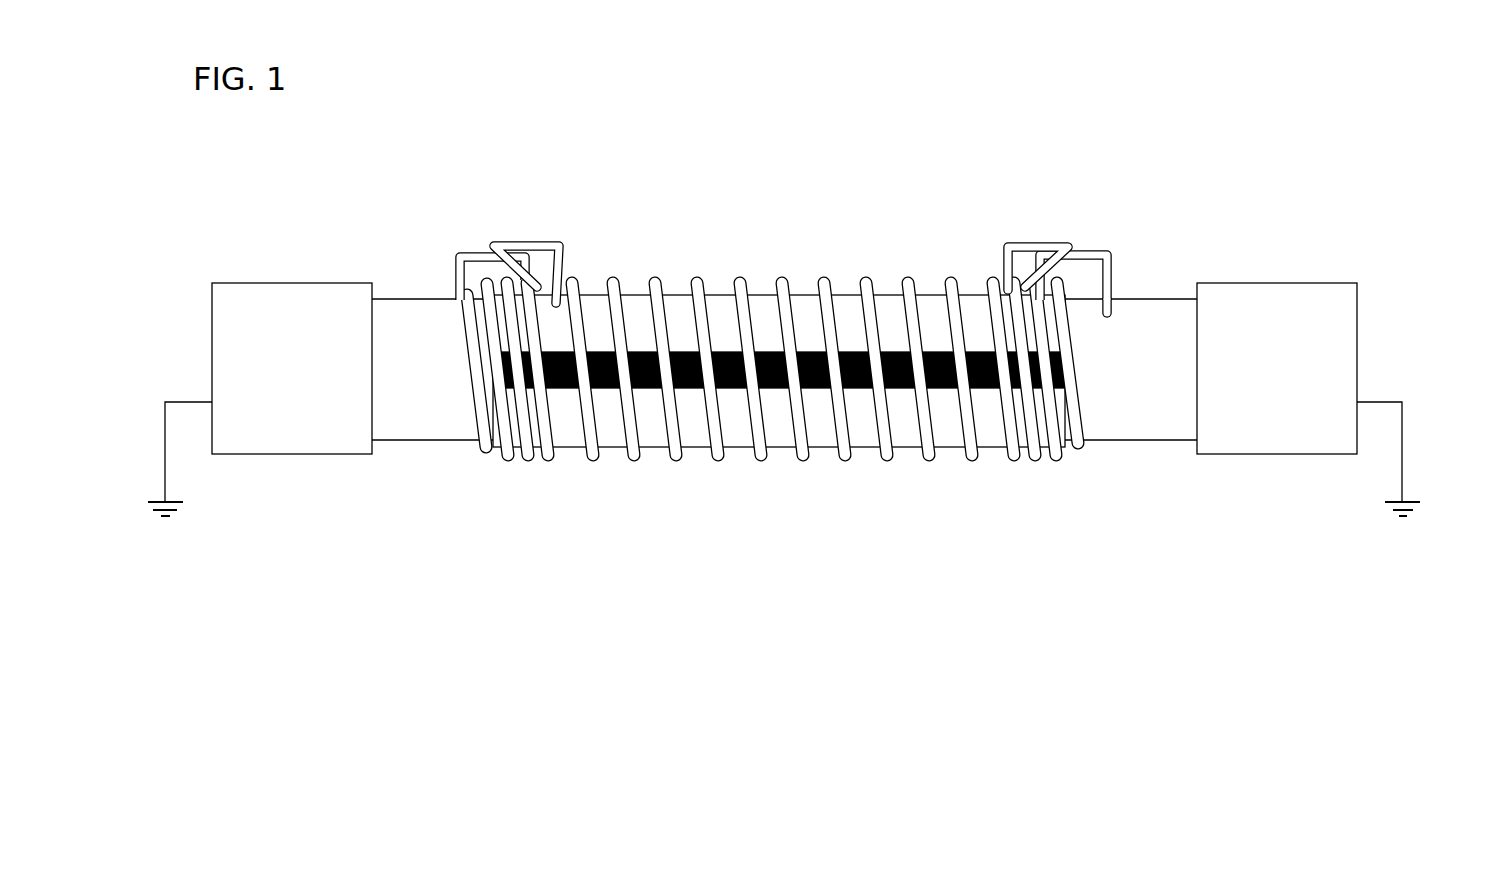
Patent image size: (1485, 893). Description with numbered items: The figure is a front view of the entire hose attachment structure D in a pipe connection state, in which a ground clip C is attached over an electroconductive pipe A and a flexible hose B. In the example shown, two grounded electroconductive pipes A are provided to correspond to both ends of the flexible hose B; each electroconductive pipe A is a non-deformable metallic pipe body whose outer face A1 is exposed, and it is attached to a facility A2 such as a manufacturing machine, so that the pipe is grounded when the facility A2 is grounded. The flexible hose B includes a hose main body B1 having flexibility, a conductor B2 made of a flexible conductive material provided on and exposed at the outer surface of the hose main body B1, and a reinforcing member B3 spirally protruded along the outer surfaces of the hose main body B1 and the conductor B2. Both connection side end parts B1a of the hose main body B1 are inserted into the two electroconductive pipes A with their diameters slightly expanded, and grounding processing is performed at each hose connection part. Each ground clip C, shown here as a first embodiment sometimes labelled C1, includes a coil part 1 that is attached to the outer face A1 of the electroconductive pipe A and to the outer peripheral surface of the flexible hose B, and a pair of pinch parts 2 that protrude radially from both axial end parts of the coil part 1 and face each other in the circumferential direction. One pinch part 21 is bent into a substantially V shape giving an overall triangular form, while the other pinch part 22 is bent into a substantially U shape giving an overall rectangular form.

The coil part 1 is at (527, 418).
The pinch parts 2 is at (452, 165).
The one pinch part 21 is at (500, 241).
The other pinch part 22 is at (470, 251).
The electroconductive pipe A is at (413, 296).
The outer face A1 is at (409, 385).
The facility A2 is at (275, 385).
The flexible hose B is at (804, 282).
The hose main body B1 is at (735, 443).
The connection side end part B1a is at (572, 442).
The conductor B2 is at (818, 388).
The reinforcing member B3 is at (967, 457).
The ground clip C is at (800, 407).
The first wire C1 is at (533, 465).
The hose attachment structure D is at (557, 187).